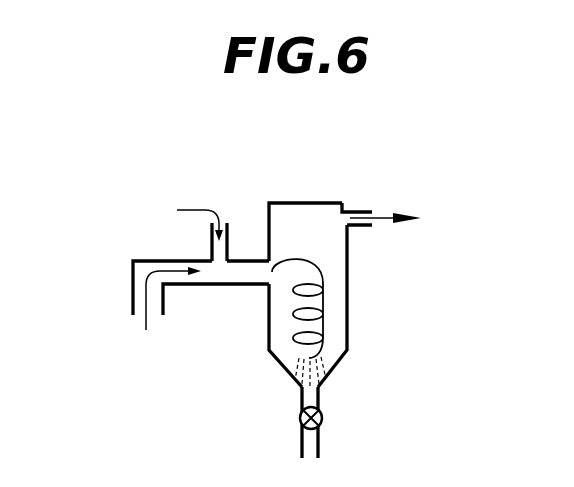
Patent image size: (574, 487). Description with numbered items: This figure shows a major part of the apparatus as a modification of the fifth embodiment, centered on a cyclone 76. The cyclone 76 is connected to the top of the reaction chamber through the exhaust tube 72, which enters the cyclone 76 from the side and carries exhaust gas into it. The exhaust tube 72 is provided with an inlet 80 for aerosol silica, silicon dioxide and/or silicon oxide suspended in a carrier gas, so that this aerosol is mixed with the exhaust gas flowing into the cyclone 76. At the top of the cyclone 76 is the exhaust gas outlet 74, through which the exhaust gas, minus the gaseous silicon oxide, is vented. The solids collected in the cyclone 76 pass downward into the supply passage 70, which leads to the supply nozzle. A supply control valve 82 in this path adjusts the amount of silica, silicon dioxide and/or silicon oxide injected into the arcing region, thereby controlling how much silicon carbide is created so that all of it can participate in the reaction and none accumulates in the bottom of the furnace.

The supply passage 70 is at (320, 446).
The exhaust tube 72 is at (148, 260).
The exhaust gas outlet 74 is at (358, 208).
The cyclone 76 is at (348, 312).
The inlet 80 is at (233, 237).
The supply control valve 82 is at (300, 418).